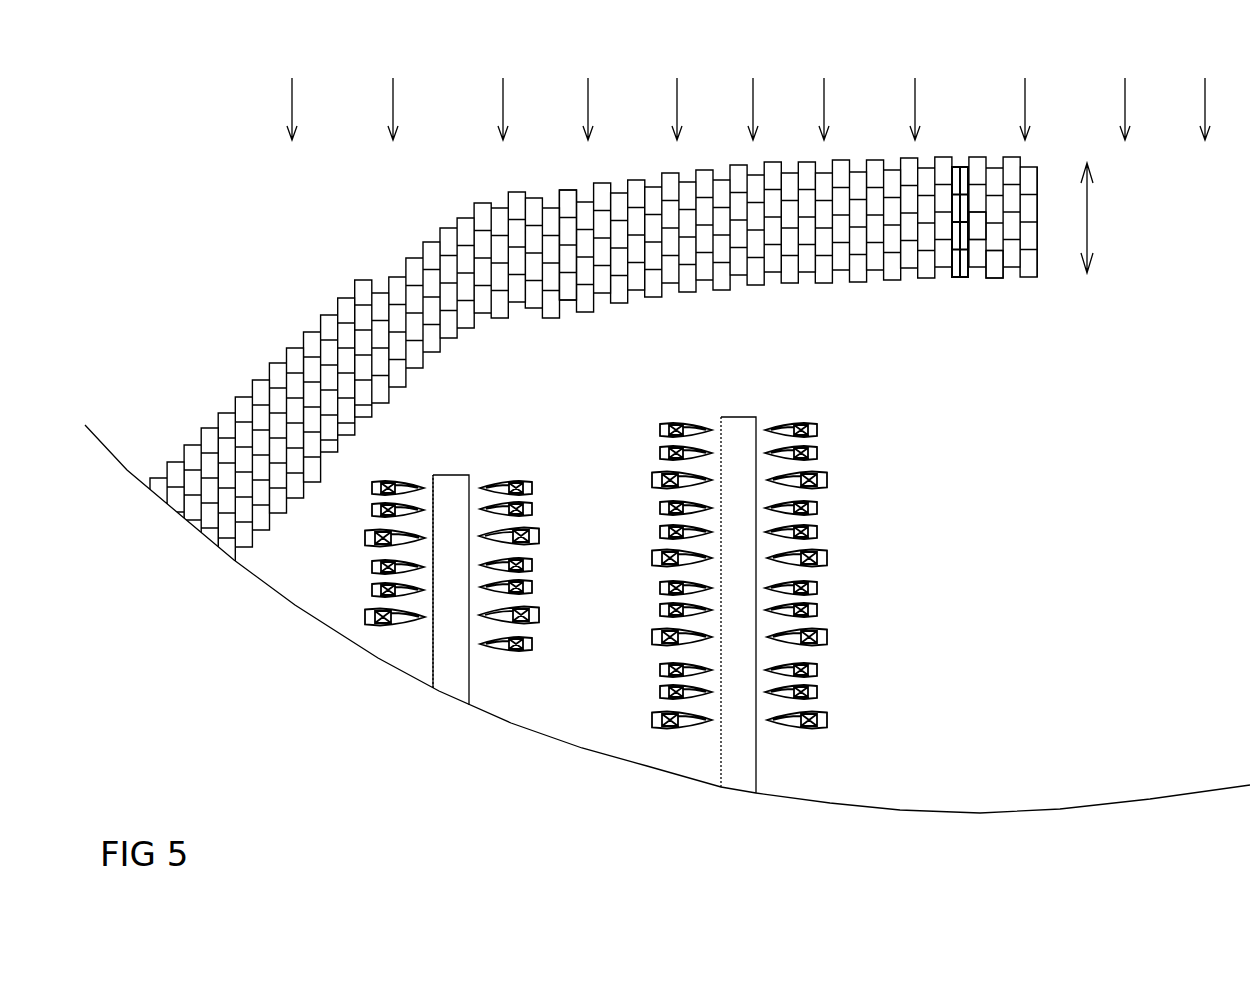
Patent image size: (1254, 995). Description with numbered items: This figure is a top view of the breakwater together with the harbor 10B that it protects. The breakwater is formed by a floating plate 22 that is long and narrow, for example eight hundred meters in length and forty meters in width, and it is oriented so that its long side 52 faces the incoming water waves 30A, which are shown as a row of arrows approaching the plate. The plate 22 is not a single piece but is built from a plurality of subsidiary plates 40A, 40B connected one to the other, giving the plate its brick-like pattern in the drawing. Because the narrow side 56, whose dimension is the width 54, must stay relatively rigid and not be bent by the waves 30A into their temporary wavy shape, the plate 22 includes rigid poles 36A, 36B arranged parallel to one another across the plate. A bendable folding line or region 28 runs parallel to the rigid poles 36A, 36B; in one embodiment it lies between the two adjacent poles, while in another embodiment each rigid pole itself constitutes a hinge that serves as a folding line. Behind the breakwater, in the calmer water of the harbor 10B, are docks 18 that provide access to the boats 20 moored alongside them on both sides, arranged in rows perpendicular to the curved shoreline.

The harbor 10B is at (1012, 472).
The dock 18 is at (738, 425).
The boat 20 is at (683, 420).
The floating plate 22 is at (400, 228).
The bendable line/region 28 is at (958, 198).
The water wave 30A is at (748, 109).
The rigid pole 36A is at (964, 182).
The rigid pole 36B is at (950, 202).
The subsidiary plate 40A is at (997, 257).
The subsidiary plate 40B is at (993, 237).
The long side (length) of the plate 52 is at (555, 182).
The short side (width) of the plate 54 is at (1097, 220).
The narrow side 56 is at (1043, 178).